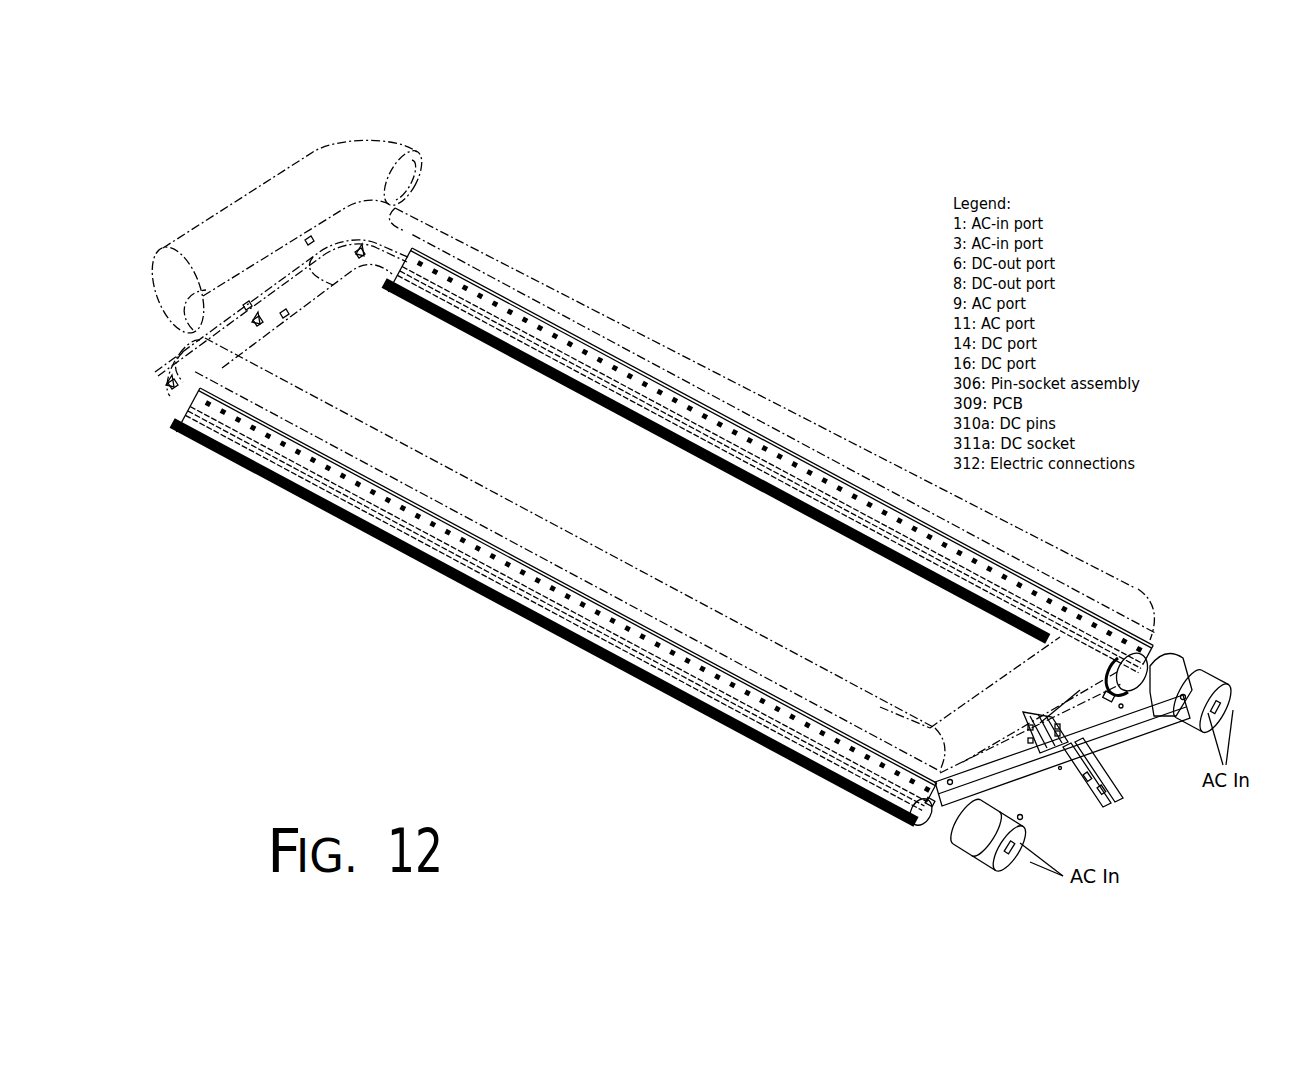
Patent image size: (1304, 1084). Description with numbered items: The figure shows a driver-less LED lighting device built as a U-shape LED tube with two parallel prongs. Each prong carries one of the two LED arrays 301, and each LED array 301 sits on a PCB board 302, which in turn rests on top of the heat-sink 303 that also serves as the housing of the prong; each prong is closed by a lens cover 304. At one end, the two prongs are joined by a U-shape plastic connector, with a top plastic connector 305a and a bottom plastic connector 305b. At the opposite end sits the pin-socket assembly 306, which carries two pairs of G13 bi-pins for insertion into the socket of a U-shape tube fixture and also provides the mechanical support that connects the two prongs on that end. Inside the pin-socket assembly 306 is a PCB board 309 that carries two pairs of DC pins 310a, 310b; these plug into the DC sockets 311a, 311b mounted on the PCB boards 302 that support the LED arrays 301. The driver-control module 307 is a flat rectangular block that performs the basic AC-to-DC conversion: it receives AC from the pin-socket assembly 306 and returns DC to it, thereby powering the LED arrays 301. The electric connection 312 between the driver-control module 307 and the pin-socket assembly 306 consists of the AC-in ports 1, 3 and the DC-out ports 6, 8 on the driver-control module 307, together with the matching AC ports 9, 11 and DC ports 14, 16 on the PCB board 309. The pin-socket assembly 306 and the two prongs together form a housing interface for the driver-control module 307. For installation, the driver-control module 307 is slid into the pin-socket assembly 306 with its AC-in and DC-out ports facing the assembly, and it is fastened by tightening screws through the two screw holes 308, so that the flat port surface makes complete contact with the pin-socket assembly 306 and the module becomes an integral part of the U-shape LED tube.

The LED array 301 is at (612, 378).
The PCB board 302 is at (223, 448).
The heat-sink 303 is at (357, 523).
The lens cover 304 is at (773, 410).
The U-shape plastic connector 305a is at (398, 163).
The U-shape plastic connector 305b is at (302, 298).
The pin-socket assembly 306 is at (1138, 745).
The driver-control module 307 is at (968, 722).
The screw holes 308 is at (950, 782).
The PCB board 309 is at (1165, 660).
The DC pins 310a is at (1120, 692).
The DC pins 310b is at (917, 820).
The DC socket 311a is at (1122, 660).
The DC socket 311b is at (923, 793).
The electric connection 312 is at (1043, 733).
The AC-in port 1 is at (1056, 727).
The AC-in port 3 is at (1056, 733).
The DC-out port 6 is at (1029, 727).
The DC-out port 8 is at (1029, 741).
The AC port 9 is at (1077, 751).
The AC port 11 is at (1070, 760).
The DC port 14 is at (1101, 792).
The DC port 16 is at (1087, 780).